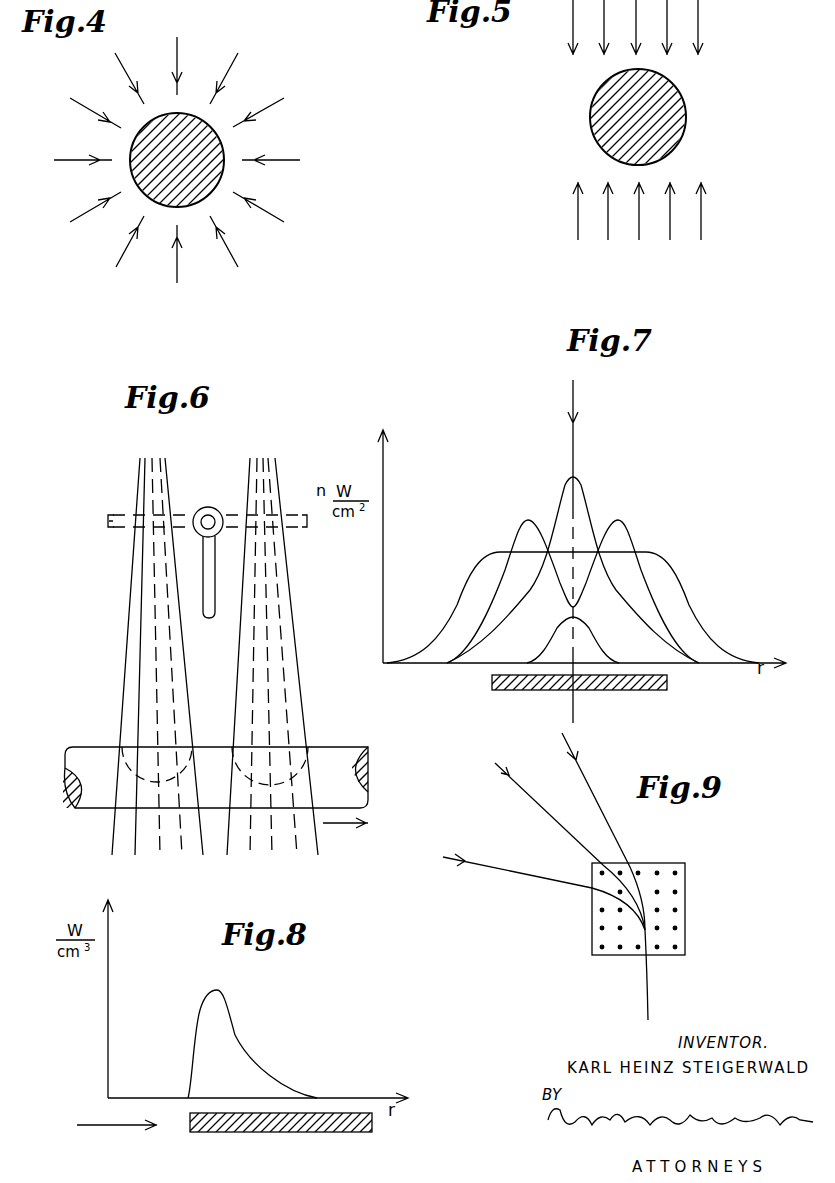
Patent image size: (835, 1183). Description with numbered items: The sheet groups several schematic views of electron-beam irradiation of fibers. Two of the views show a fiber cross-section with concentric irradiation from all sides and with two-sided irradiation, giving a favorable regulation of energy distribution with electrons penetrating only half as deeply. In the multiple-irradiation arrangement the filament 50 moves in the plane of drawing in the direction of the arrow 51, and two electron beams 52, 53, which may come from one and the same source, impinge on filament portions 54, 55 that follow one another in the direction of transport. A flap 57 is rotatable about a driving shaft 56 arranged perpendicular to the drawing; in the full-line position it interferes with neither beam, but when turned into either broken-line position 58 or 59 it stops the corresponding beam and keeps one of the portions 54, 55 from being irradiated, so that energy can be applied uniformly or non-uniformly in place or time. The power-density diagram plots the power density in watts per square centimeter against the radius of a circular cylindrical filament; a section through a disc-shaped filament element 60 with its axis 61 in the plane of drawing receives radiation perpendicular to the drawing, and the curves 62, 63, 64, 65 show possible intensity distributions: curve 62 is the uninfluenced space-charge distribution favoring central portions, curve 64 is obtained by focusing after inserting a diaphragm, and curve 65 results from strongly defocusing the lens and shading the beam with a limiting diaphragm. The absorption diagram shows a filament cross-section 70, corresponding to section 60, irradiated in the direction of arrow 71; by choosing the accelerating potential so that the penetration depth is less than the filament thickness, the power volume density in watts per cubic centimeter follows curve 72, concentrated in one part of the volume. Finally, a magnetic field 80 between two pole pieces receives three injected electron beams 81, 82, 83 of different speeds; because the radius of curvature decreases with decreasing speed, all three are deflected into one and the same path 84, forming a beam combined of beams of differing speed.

In FIG. 6, the filament 50 is at (332, 756).
In FIG. 6, the arrow indicating direction of transport 51 is at (337, 826).
In FIG. 6, the electron beam 52 is at (141, 470).
In FIG. 6, the electron beam 53 is at (262, 470).
In FIG. 6, the filament portion 54 is at (143, 758).
In FIG. 6, the filament portion 55 is at (293, 753).
In FIG. 6, the driving shaft 56 is at (222, 490).
In FIG. 6, the flap 57 is at (210, 619).
In FIG. 6, the flap position 58 is at (106, 523).
In FIG. 6, the flap position 59 is at (293, 528).
In FIG. 7, the circular disc-shaped filament element 60 is at (492, 685).
In FIG. 7, the axis 61 is at (575, 453).
In FIG. 7, the intensity distribution curve 62 is at (557, 632).
In FIG. 7, the intensity distribution curve 63 is at (521, 526).
In FIG. 7, the intensity distribution curve 64 is at (567, 482).
In FIG. 7, the intensity distribution curve 65 is at (469, 586).
In FIG. 8, the filament cross-section 70 is at (265, 1133).
In FIG. 8, the arrow indicating direction of radiation 71 is at (128, 1125).
In FIG. 8, the absorption distribution curve 72 is at (233, 1023).
In FIG. 9, the magnetic field 80 is at (640, 863).
In FIG. 9, the electron beam 81 is at (563, 739).
In FIG. 9, the electron beam 82 is at (497, 766).
In FIG. 9, the electron beam 83 is at (448, 858).
In FIG. 9, the common beam path 84 is at (647, 998).